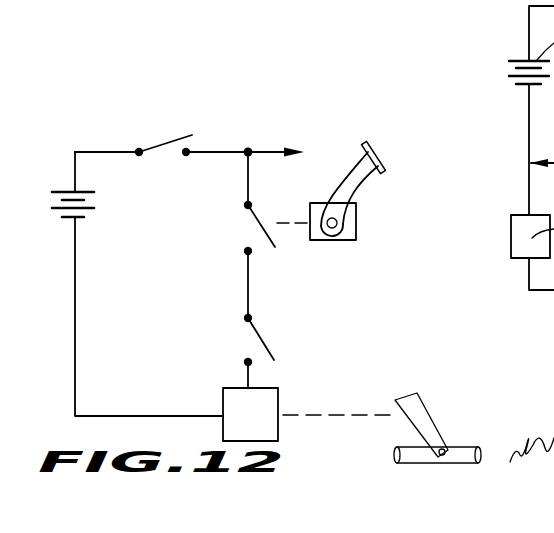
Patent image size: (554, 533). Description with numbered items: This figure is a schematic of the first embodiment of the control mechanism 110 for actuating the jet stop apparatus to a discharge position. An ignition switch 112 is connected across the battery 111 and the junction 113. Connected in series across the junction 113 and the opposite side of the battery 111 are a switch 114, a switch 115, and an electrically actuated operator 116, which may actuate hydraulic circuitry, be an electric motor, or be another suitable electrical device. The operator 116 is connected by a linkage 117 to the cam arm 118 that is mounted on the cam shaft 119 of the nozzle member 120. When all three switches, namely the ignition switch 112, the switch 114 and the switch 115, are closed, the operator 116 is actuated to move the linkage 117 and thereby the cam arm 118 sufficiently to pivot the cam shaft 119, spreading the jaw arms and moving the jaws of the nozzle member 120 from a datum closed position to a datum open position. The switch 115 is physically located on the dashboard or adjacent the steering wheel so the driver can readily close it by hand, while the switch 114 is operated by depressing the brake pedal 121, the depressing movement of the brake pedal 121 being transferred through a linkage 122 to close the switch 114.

The control mechanism 110 is at (79, 325).
The battery 111 is at (77, 190).
The ignition switch 112 is at (153, 145).
The junction 113 is at (250, 147).
The switch 114 is at (253, 218).
The switch 115 is at (262, 333).
The electrically actuated operator 116 is at (232, 387).
The linkage 117 is at (343, 413).
The cam arm 118 is at (418, 407).
The cam shaft 119 is at (446, 447).
The nozzle member 120 is at (416, 463).
The brake pedal 121 is at (345, 190).
The linkage 122 is at (287, 218).